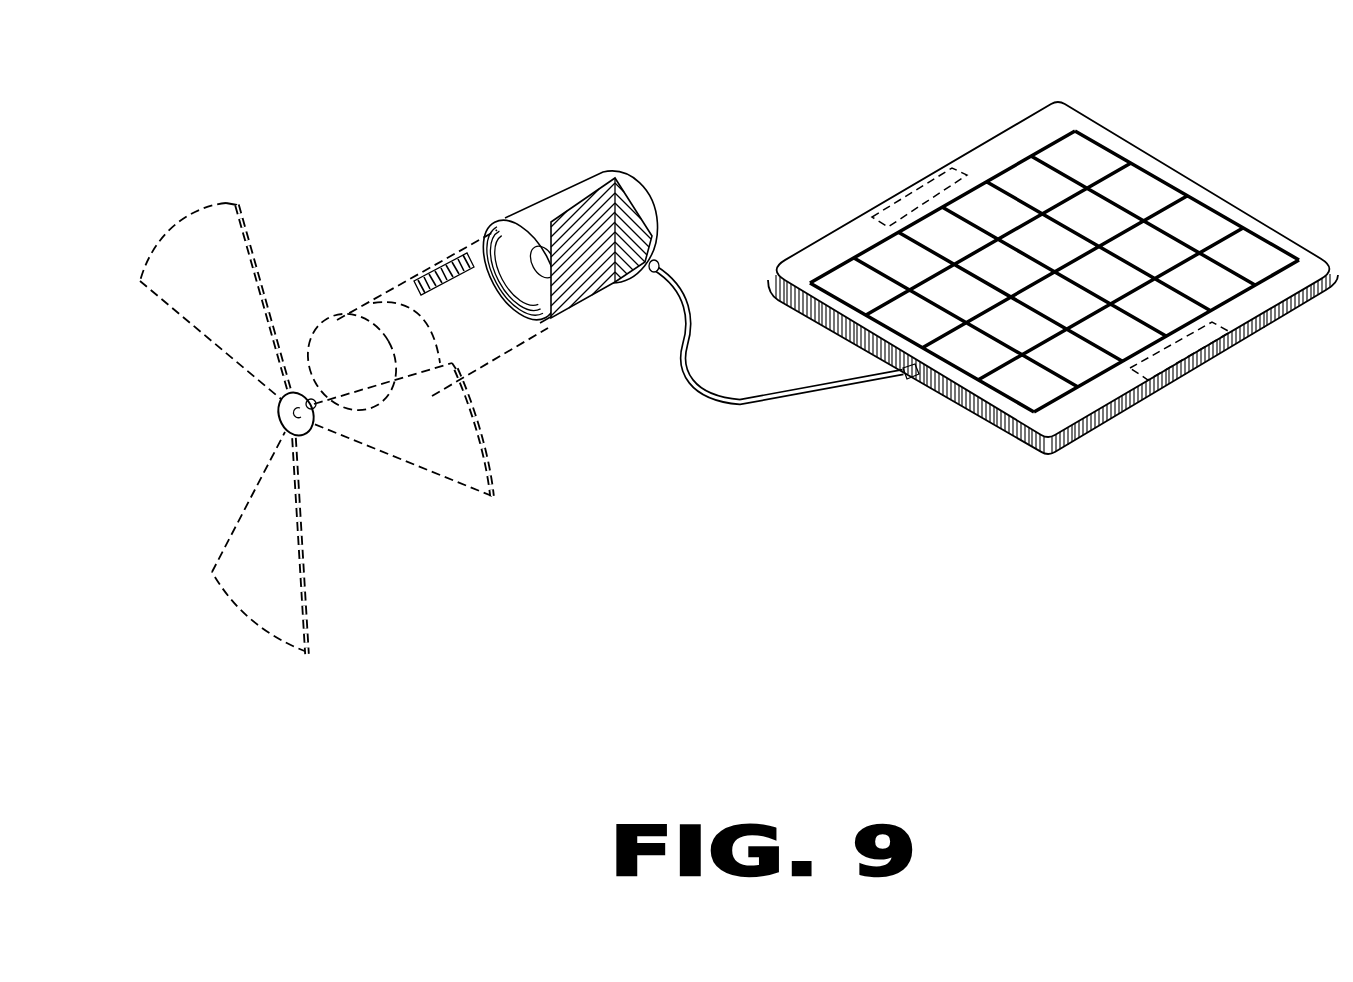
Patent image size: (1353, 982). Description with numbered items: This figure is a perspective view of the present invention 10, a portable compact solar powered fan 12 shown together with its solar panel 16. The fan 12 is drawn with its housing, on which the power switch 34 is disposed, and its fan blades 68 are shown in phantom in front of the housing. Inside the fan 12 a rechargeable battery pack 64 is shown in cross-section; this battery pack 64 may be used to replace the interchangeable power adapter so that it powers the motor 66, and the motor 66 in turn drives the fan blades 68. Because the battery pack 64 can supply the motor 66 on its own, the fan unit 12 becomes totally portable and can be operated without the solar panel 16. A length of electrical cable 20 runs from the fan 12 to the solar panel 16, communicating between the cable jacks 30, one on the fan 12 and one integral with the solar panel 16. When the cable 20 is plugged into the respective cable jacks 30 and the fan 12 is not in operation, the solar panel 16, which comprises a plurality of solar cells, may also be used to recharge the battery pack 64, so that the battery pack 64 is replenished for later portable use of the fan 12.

The present invention 10 is at (312, 178).
The portable compact solar powered fan 12 is at (454, 243).
The solar panel 16 is at (1043, 456).
The electrical cable 20 is at (755, 403).
The cable jacks 30 is at (660, 266).
The power switch 34 is at (433, 265).
The rechargeable battery pack 64 is at (604, 176).
The motor 66 is at (377, 325).
The fan blades 68 is at (399, 430).